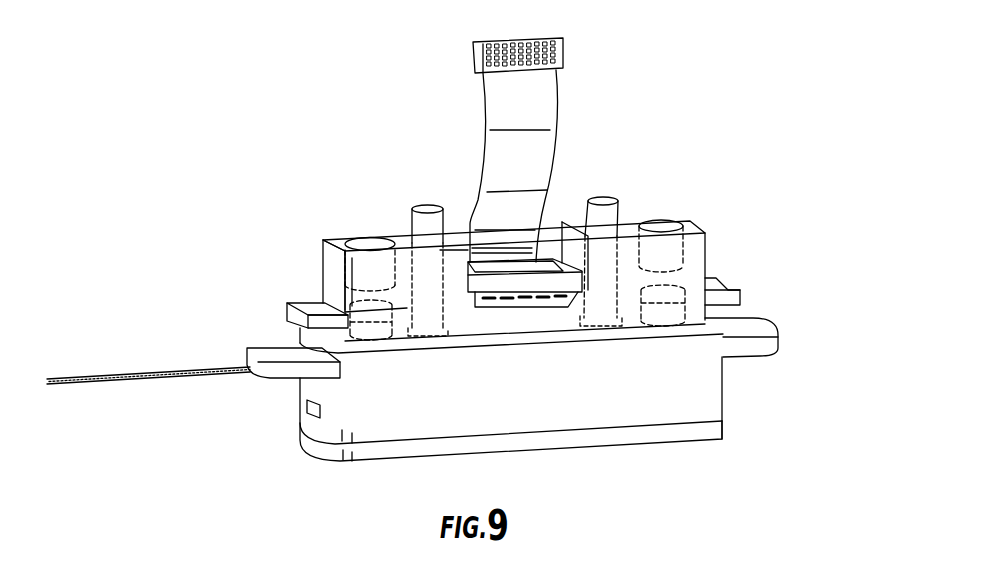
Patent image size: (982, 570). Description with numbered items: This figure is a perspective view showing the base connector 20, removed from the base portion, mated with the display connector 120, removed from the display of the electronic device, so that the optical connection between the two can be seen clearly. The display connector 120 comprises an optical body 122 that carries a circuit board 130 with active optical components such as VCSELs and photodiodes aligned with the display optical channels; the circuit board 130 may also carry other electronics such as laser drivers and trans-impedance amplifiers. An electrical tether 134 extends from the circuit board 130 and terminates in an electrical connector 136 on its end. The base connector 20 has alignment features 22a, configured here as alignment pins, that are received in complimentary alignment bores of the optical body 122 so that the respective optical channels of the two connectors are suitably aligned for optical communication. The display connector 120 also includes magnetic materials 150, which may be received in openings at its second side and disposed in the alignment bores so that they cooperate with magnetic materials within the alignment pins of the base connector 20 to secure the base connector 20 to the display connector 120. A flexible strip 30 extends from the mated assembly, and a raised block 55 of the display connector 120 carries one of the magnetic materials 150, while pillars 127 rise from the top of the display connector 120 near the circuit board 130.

The base connector 20 is at (785, 370).
The alignment features 22a is at (371, 337).
The flexible circuit 30 is at (156, 384).
The raised block 55 is at (704, 228).
The display connector 120 is at (757, 249).
The optical body 122 is at (330, 278).
The pillars 127 is at (427, 206).
The circuit board 130 is at (557, 222).
The electrical tether 134 is at (490, 142).
The electrical connector 136 is at (480, 46).
The magnetic materials 150 is at (366, 243).